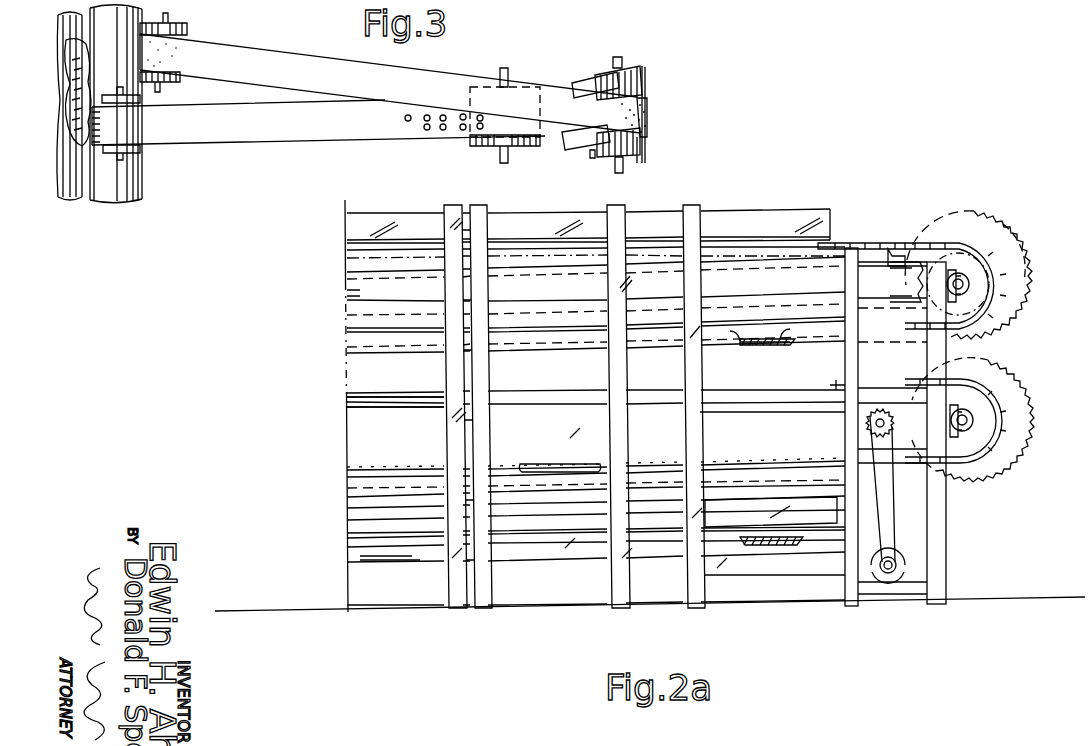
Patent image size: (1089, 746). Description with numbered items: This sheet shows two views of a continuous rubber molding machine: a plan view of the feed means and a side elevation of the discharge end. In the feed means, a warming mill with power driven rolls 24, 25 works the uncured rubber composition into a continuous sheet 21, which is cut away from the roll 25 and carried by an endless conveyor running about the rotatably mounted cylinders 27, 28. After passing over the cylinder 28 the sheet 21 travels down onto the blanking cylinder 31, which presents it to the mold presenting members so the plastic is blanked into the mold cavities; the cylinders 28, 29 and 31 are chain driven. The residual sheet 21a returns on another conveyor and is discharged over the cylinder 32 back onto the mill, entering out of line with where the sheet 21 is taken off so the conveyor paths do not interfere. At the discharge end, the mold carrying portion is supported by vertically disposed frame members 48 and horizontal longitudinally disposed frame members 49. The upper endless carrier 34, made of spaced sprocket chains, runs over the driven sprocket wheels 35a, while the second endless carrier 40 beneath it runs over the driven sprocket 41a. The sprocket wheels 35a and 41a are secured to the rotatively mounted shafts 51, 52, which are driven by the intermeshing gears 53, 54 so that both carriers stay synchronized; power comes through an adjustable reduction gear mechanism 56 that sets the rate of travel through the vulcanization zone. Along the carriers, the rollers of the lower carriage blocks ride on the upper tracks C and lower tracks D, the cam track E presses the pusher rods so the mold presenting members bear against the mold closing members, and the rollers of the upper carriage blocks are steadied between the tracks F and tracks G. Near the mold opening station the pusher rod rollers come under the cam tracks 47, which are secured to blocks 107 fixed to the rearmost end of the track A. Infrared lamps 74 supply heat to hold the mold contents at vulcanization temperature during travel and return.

In FIG. 3, the continuous sheet 21 is at (218, 48).
In FIG. 3, the residual sheet 21a is at (262, 132).
In FIG. 3, the power driven roll 24 is at (72, 173).
In FIG. 3, the power driven roll 25 is at (125, 190).
In FIG. 3, the rotatably mounted cylinder 27 is at (178, 78).
In FIG. 3, the rotatably mounted cylinder 28 is at (578, 77).
In FIG. 3, the cylinder 29 is at (497, 147).
In FIG. 3, the blanking cylinder 31 is at (640, 72).
In FIG. 3, the rotatably mounted cylinder 32 is at (140, 152).
In FIG. 2A, the upper endless carrier 34 is at (888, 247).
In FIG. 2A, the driven sprocket wheels 35a is at (920, 278).
In FIG. 2A, the second endless carrier 40 is at (840, 385).
In FIG. 2A, the driven sprocket 41a is at (980, 438).
In FIG. 2A, the cam tracks 47 is at (980, 312).
In FIG. 2A, the vertically disposed frame members 48 is at (847, 572).
In FIG. 2A, the horizontal longitudinally disposed frame members 49 is at (360, 303).
In FIG. 2A, the rotatively mounted shaft 51 is at (963, 283).
In FIG. 2A, the rotatively mounted shaft 52 is at (977, 410).
In FIG. 2A, the gear 53 is at (1003, 233).
In FIG. 2A, the gear 54 is at (1013, 468).
In FIG. 2A, the reduction gear mechanism 56 is at (890, 577).
In FIG. 2A, the infrared lamps 74 is at (563, 197).
In FIG. 2A, the blocks 107 is at (893, 257).
In FIG. 2A, the track A is at (343, 275).
In FIG. 2A, the upper tracks C is at (353, 400).
In FIG. 2A, the lower tracks D is at (357, 488).
In FIG. 2A, the cam track E is at (358, 317).
In FIG. 2A, the tracks F is at (362, 328).
In FIG. 2A, the tracks G is at (353, 353).